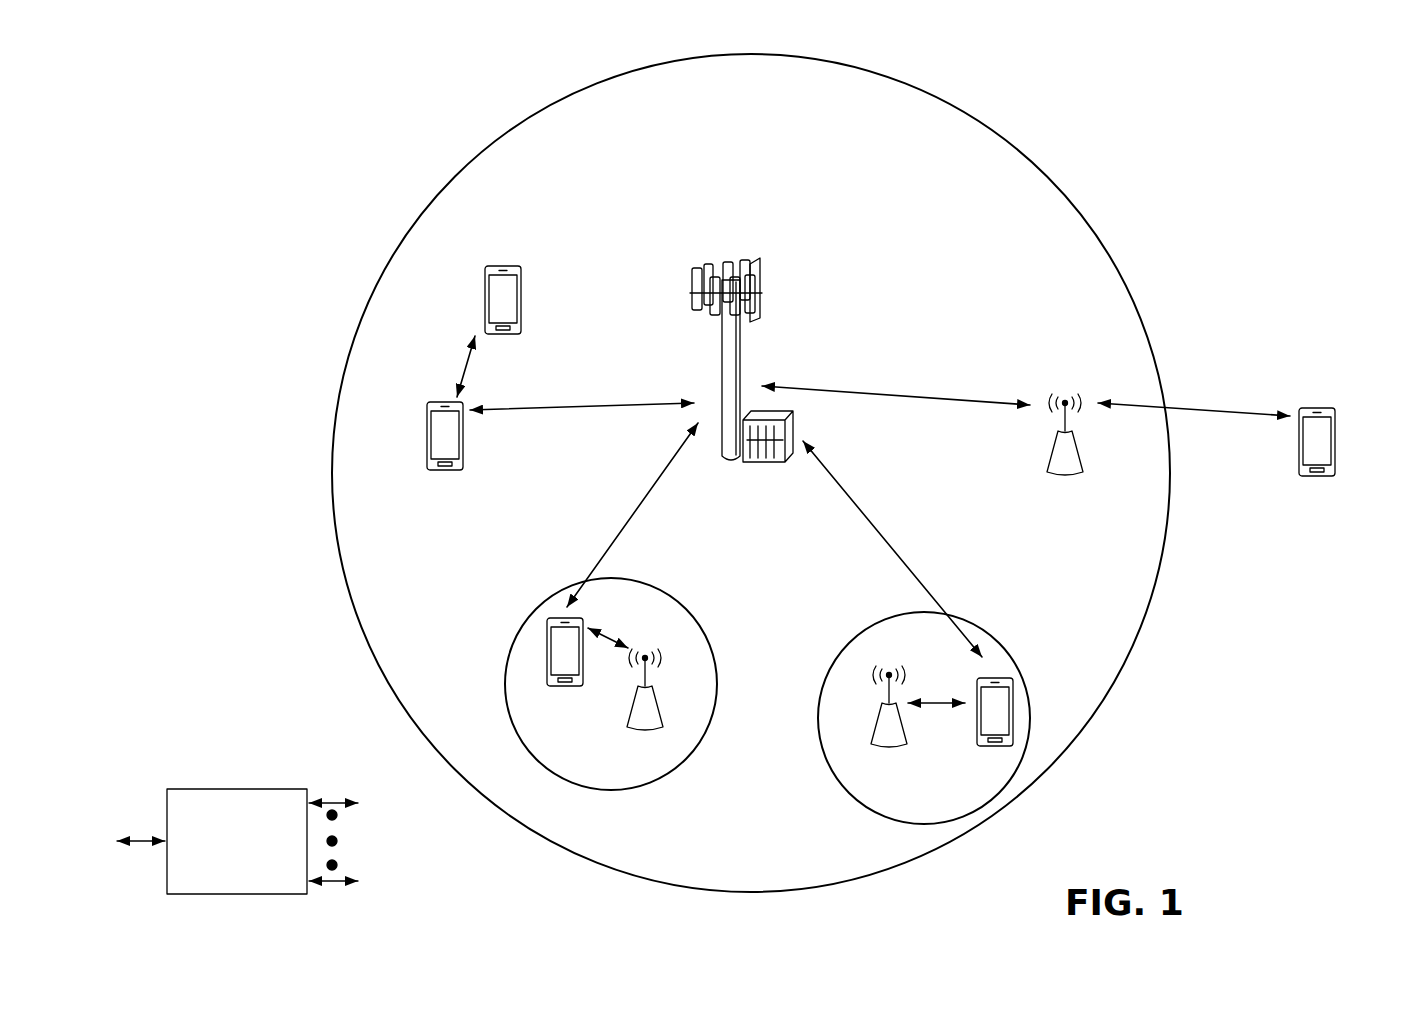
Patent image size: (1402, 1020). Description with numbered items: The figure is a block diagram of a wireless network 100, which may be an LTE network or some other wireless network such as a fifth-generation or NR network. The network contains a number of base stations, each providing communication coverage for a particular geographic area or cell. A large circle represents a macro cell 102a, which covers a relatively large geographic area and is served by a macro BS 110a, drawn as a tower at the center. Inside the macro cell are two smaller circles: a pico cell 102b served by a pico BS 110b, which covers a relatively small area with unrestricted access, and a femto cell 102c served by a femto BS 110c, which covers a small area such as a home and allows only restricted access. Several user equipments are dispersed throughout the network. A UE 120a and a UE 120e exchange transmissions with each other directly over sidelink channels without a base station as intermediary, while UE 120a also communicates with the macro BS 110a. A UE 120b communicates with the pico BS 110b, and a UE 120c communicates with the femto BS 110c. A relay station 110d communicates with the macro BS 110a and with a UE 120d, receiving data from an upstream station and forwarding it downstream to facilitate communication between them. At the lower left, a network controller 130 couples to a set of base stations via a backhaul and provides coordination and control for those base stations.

The wireless network 100 is at (207, 52).
The macro cell 102a is at (1030, 160).
The pico cell 102b is at (700, 620).
The femto cell 102c is at (863, 632).
The macro BS 110a is at (738, 252).
The pico BS 110b is at (665, 710).
The femto BS 110c is at (872, 728).
The relay station 110d is at (1066, 394).
The UE 120a is at (427, 433).
The UE 120b is at (552, 686).
The UE 120c is at (978, 748).
The UE 120d is at (1329, 405).
The UE 120e is at (485, 290).
The network controller 130 is at (236, 789).